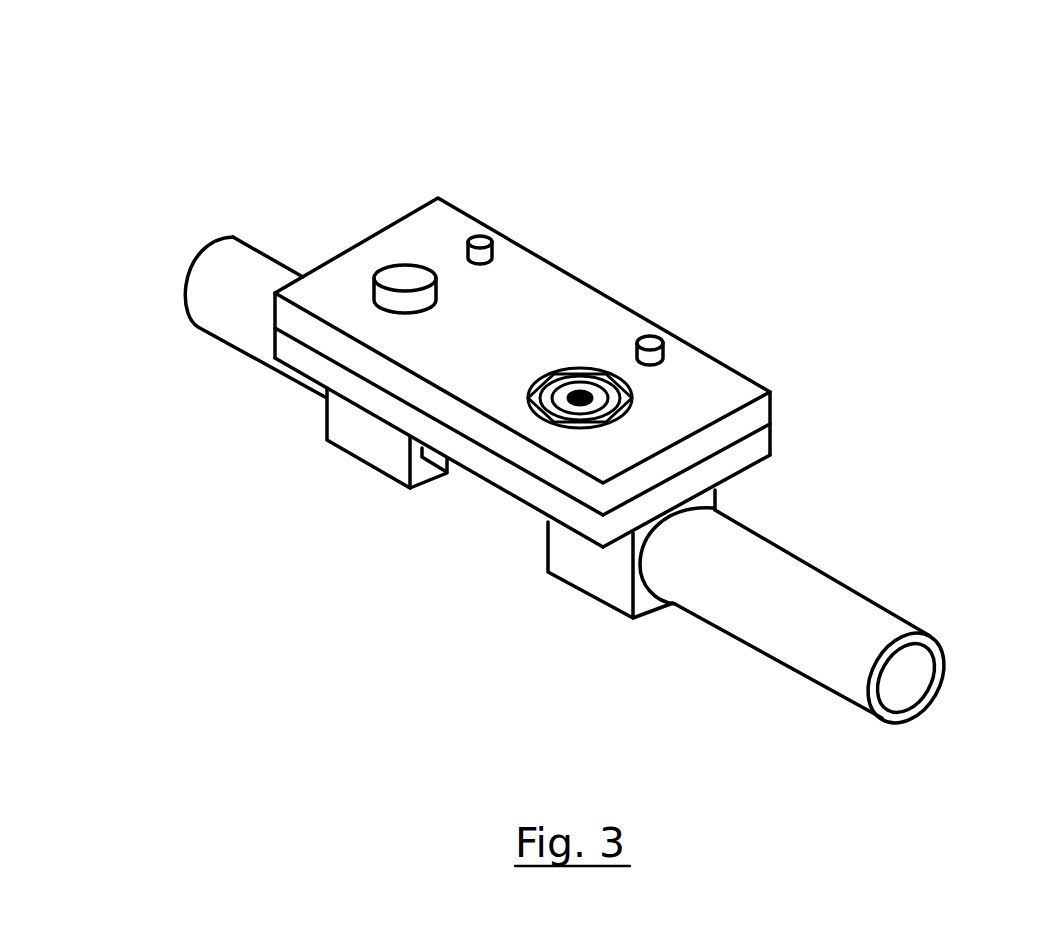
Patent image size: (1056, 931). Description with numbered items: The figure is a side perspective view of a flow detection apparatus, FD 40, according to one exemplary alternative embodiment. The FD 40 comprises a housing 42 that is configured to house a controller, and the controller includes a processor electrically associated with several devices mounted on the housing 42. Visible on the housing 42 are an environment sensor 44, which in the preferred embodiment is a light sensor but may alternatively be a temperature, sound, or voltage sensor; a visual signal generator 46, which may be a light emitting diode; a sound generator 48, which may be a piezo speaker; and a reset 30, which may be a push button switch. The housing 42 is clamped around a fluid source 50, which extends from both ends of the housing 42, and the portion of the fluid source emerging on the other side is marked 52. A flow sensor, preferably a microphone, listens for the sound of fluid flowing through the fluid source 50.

The reset 30 is at (390, 268).
The flow detection apparatus 40 is at (845, 252).
The housing 42 is at (580, 277).
The environment sensor 44 is at (653, 337).
The visual signal generator 46 is at (478, 236).
The sound generator 48 is at (538, 414).
The fluid source 50 is at (212, 273).
The tube 52 is at (853, 625).